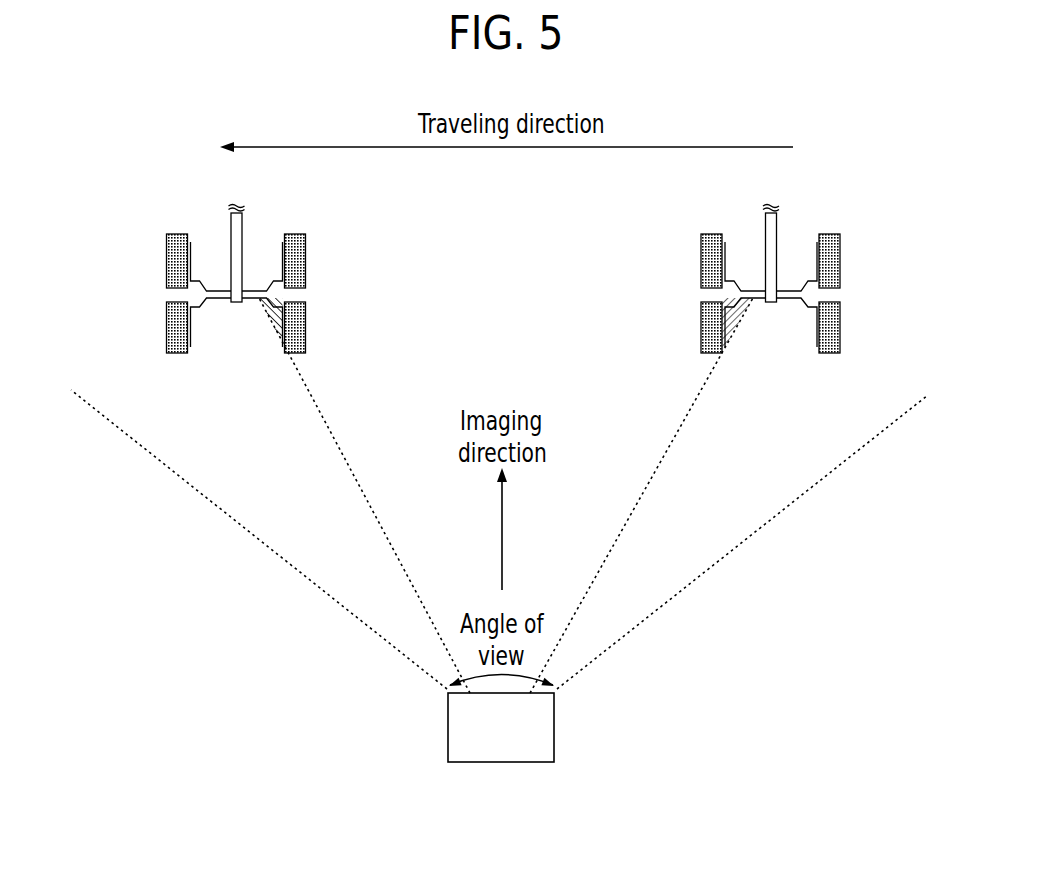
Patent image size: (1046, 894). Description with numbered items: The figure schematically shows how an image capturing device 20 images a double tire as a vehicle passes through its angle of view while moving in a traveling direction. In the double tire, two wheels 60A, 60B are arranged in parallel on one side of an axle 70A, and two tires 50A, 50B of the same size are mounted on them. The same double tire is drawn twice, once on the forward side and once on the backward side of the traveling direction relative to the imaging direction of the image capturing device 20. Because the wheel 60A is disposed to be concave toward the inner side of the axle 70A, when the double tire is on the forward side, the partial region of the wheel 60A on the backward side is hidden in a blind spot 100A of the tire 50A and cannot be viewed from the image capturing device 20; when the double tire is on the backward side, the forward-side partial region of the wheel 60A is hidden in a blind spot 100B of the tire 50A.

The image capturing device 20 is at (554, 728).
The tire 50A is at (166, 338).
The tire 50B is at (166, 250).
The wheel 60A is at (268, 298).
The wheel 60B is at (278, 281).
The axle 70A is at (242, 226).
The blind spot 100A is at (278, 323).
The blind spot 100B is at (724, 318).